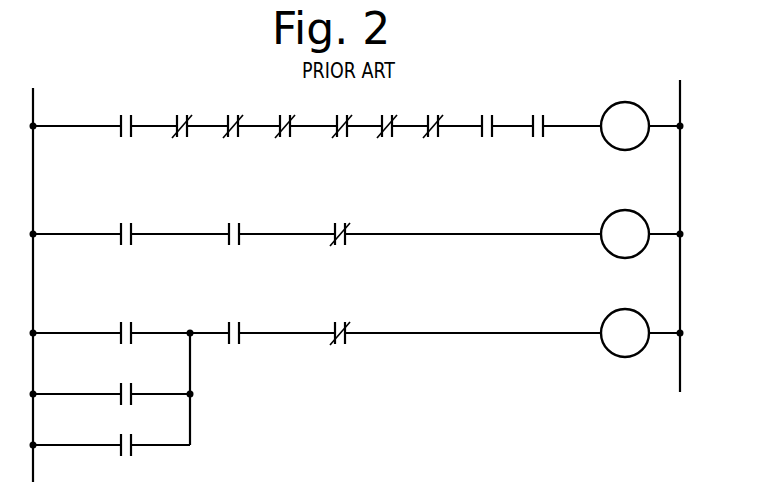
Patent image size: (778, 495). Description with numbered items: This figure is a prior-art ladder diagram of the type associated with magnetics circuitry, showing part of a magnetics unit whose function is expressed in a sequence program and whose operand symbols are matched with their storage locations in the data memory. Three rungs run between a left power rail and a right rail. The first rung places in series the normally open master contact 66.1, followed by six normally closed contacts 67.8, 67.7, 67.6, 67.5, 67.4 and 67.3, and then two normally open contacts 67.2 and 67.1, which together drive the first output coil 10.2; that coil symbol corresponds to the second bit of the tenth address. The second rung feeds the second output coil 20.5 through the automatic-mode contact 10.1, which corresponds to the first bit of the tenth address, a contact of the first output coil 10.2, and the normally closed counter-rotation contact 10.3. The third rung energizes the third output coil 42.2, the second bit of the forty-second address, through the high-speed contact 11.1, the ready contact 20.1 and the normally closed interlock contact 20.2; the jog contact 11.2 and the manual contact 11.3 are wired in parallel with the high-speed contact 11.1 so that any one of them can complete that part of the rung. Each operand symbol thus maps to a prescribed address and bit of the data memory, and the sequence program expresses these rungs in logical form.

The MF contact 66.1 is at (127, 132).
The M28 contact 67.8 is at (181, 132).
The M24 contact 67.7 is at (232, 132).
The M22 contact 67.6 is at (283, 132).
The M21 contact 67.5 is at (340, 132).
The M18 contact 67.4 is at (386, 132).
The M14 contact 67.3 is at (434, 132).
The M12 contact 67.2 is at (485, 132).
The M11 contact 67.1 is at (536, 132).
The M03 coil 10.2 is at (470, 187).
The AUT contact 10.1 is at (126, 237).
The SPCCW contact 10.3 is at (340, 237).
The SPCW coil 20.5 is at (625, 244).
The HSM contact 11.1 is at (125, 336).
The READY contact 20.1 is at (234, 336).
The CRM contact 20.2 is at (339, 336).
The CRA coil 42.2 is at (625, 344).
The J.M contact 11.2 is at (135, 403).
The MAN contact 11.3 is at (142, 454).